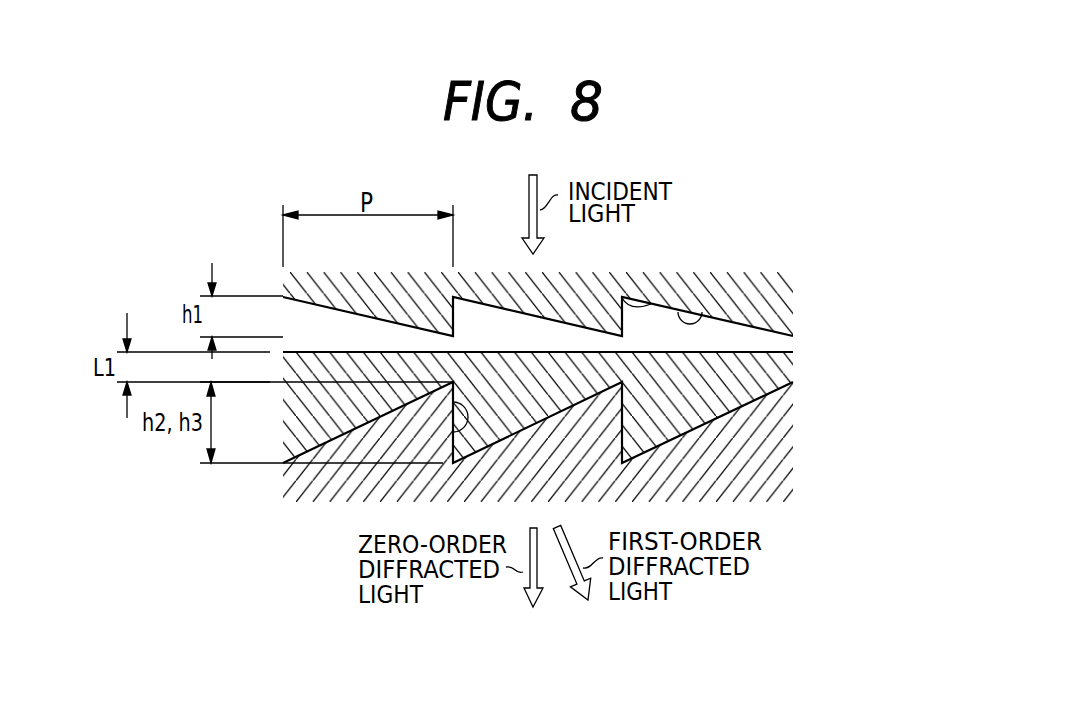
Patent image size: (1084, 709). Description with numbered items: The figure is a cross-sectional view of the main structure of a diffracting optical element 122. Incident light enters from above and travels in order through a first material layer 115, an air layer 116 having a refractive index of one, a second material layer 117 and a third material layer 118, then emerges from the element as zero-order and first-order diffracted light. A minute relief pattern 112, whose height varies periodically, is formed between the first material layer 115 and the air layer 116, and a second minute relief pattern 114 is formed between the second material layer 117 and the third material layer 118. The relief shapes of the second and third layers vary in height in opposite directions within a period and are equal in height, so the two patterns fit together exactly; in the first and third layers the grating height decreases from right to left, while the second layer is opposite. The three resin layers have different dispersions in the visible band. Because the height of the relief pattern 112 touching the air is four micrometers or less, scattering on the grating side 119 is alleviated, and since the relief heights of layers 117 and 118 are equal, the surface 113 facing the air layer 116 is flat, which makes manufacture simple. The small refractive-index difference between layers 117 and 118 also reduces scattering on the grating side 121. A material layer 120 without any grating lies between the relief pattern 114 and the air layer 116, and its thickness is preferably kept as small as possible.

The minute relief pattern 112 is at (580, 269).
The surface 113 is at (538, 393).
The minute relief pattern 114 is at (748, 400).
The first material layer 115 is at (758, 298).
The air layer 116 is at (777, 340).
The second material layer 117 is at (303, 418).
The third material layer 118 is at (757, 453).
The grating side 119 is at (651, 303).
The material layer 120 is at (798, 352).
The grating side 121 is at (453, 433).
The diffracting optical element 122 is at (580, 372).